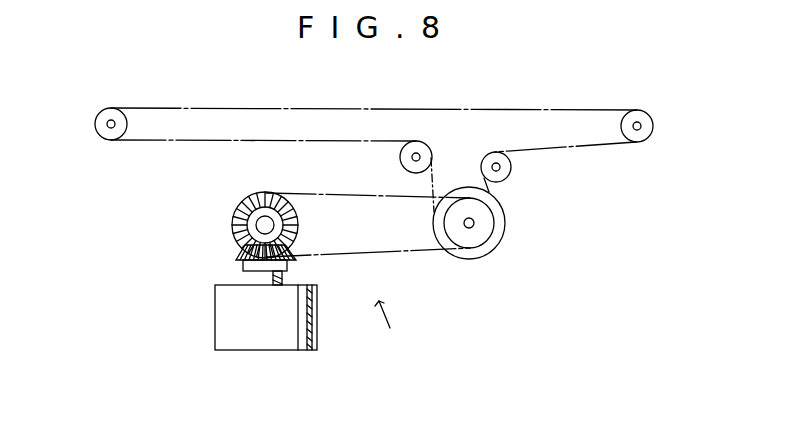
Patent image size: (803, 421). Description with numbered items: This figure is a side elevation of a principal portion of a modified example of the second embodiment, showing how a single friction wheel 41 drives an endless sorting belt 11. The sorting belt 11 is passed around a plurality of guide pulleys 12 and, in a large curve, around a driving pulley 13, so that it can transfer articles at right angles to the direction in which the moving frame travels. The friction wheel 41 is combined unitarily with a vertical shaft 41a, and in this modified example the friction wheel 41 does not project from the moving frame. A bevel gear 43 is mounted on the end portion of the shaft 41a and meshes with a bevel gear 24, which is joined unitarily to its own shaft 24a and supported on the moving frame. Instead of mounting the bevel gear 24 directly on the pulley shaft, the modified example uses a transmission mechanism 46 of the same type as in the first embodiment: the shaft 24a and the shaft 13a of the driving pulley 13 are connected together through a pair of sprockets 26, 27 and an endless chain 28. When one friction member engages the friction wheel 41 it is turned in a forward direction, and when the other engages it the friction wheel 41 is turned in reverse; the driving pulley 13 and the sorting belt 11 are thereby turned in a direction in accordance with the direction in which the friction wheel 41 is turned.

The sorting belt 11 is at (555, 110).
The guide pulleys 12 is at (95, 124).
The driving pulley 13 is at (500, 230).
The shaft of the driving pulley 13a is at (473, 221).
The sprocket 27 is at (475, 241).
The bevel gear 24 is at (233, 221).
The shaft 24a is at (263, 221).
The sprocket 26 is at (281, 196).
The endless chain 28 is at (408, 253).
The bevel gear 43 is at (242, 254).
The vertical shaft 41a is at (262, 280).
The friction wheel 41 is at (222, 338).
The transmission mechanism 46 is at (393, 324).